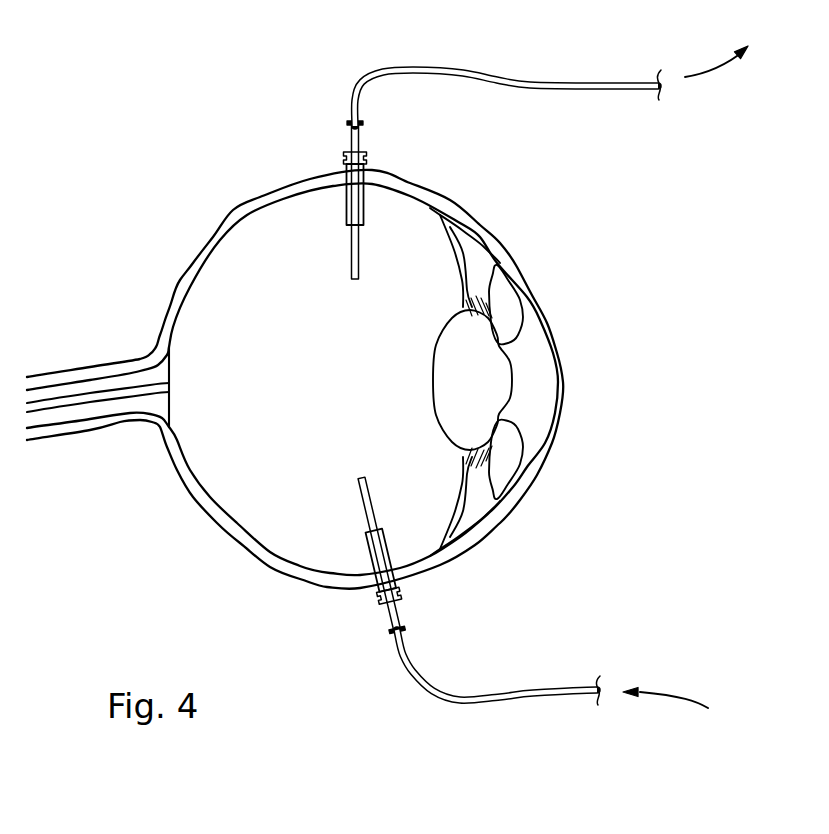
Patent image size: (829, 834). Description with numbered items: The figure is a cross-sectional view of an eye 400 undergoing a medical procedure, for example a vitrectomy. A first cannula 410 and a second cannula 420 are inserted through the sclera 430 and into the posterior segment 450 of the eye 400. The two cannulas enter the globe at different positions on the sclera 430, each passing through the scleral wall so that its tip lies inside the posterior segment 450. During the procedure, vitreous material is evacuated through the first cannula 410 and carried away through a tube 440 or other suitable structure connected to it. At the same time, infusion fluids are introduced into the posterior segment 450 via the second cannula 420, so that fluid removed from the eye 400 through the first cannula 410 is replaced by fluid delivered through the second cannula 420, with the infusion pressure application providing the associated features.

The eye 400 is at (238, 211).
The first cannula 410 is at (364, 158).
The second cannula 420 is at (401, 594).
The sclera 430 is at (290, 575).
The tube 440 is at (550, 82).
The posterior segment 450 is at (262, 420).